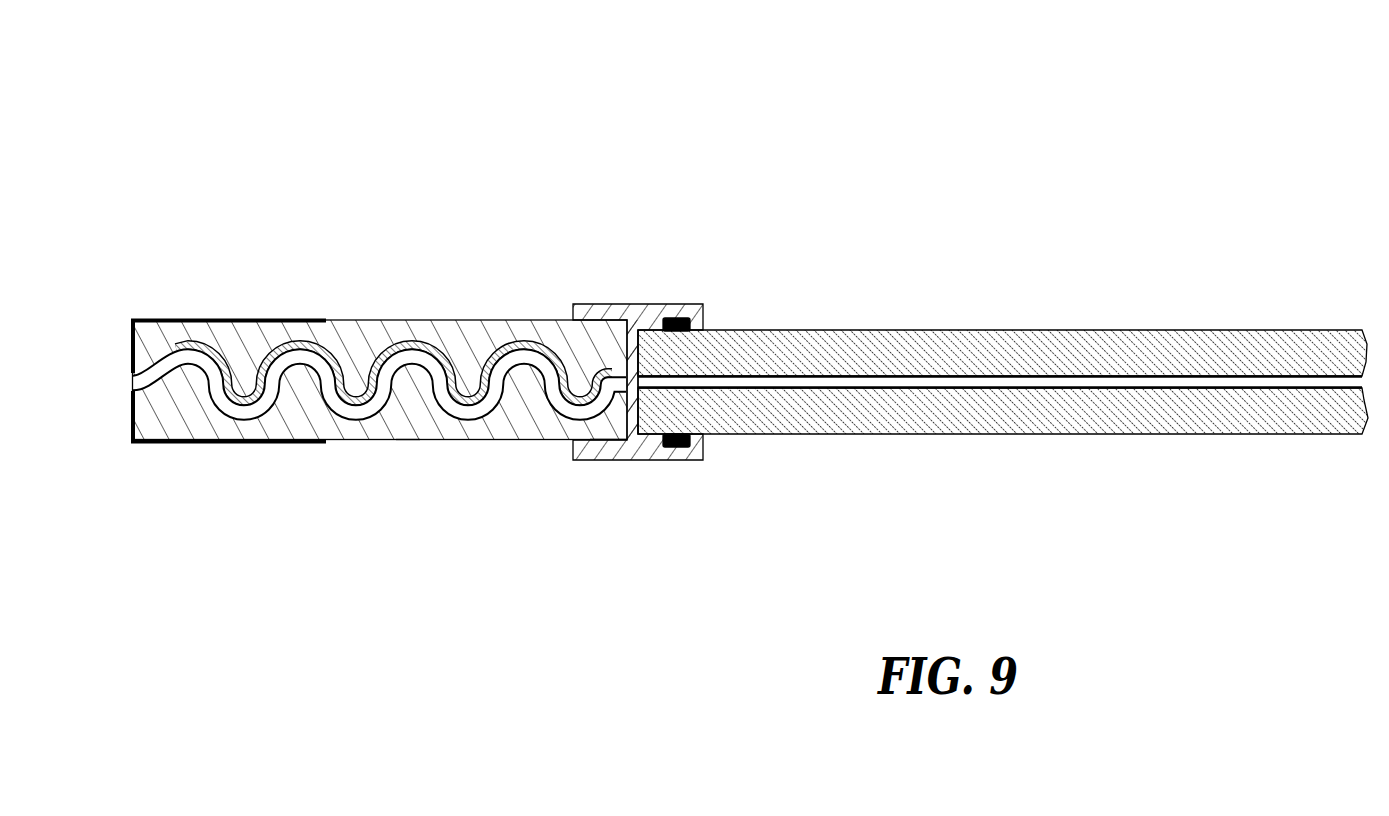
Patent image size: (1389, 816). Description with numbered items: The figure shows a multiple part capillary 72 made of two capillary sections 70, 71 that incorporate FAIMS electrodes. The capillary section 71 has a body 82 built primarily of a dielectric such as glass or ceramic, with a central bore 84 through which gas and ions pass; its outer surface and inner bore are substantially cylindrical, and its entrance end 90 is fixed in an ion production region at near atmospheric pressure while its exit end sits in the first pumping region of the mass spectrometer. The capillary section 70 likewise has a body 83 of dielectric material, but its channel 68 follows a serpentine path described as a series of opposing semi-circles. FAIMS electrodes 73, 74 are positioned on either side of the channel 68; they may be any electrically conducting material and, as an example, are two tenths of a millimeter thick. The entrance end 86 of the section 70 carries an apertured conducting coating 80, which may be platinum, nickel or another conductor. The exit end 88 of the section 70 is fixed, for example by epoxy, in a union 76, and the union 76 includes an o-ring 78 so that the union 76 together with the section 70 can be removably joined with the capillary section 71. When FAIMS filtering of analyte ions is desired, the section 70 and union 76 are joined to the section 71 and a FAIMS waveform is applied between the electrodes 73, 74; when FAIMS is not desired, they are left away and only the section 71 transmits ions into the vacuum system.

The multiple part capillary 72 is at (672, 81).
The capillary section 70 is at (367, 306).
The FAIMS electrode 74 is at (420, 345).
The channel 68 is at (240, 405).
The apertured conducting coating 80 is at (162, 305).
The entrance end 86 is at (123, 450).
The body 83 is at (408, 423).
The FAIMS electrode 73 is at (437, 405).
The exit end 88 is at (604, 423).
The union 76 is at (616, 293).
The entrance end 90 is at (653, 395).
The o-ring 78 is at (683, 318).
The capillary section 71 is at (953, 320).
The body 82 is at (865, 350).
The central bore 84 is at (1002, 383).